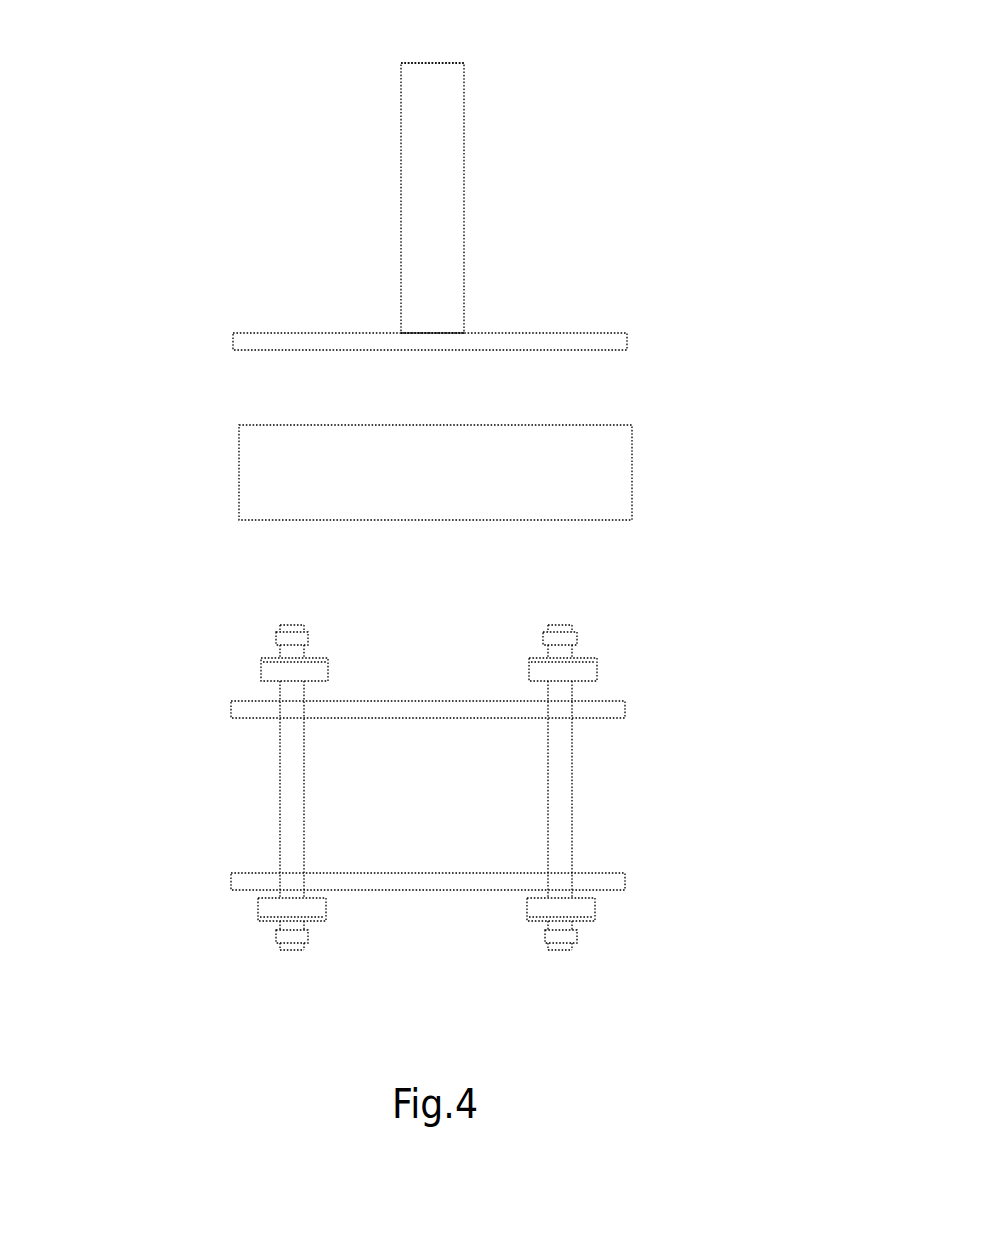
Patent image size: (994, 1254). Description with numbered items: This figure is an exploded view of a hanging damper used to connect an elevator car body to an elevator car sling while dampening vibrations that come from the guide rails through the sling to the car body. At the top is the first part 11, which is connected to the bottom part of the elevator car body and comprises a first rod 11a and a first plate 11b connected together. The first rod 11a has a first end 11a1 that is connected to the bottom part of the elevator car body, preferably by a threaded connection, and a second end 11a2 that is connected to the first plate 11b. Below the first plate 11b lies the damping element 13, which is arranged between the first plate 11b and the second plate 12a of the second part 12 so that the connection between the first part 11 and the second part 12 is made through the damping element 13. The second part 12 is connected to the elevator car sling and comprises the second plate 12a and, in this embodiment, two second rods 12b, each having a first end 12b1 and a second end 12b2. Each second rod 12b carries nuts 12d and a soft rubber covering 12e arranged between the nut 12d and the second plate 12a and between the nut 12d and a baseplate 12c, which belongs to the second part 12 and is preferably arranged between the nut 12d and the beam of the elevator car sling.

The first part 11 is at (437, 199).
The first rod 11a is at (430, 205).
The first end 11a1 is at (432, 62).
The second end 11a2 is at (413, 333).
The first plate 11b is at (257, 342).
The damping element 13 is at (602, 463).
The second part 12 is at (455, 801).
The second plate 12a is at (230, 882).
The second rod 12b is at (290, 788).
The first end 12b1 is at (575, 630).
The second end 12b2 is at (570, 945).
The baseplate 12c is at (233, 706).
The nut 12d is at (272, 638).
The soft rubber covering 12e is at (262, 668).